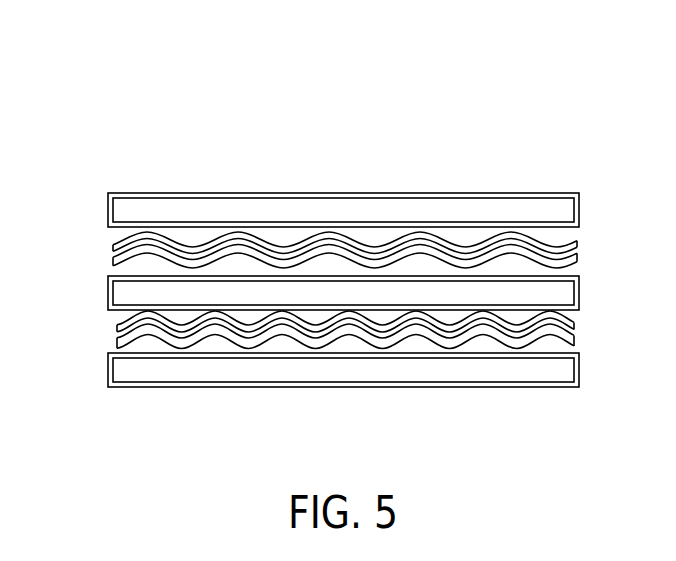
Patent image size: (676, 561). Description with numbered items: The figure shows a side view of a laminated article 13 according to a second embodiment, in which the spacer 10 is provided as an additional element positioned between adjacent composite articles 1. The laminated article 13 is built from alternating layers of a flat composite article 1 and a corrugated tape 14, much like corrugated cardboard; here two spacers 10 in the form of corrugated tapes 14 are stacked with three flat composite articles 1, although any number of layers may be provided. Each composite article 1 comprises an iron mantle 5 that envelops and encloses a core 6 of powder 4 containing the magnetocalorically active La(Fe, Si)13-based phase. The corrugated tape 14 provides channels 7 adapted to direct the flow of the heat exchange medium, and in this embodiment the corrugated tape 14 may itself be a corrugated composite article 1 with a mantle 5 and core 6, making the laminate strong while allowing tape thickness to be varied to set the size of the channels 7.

The composite article 1 is at (118, 217).
The powder 4 is at (415, 285).
The iron mantle 5 is at (577, 207).
The core 6 is at (447, 285).
The channels 7 is at (290, 236).
The spacer 10 is at (86, 337).
The laminated article 13 is at (588, 95).
The corrugated tape 14 is at (577, 243).